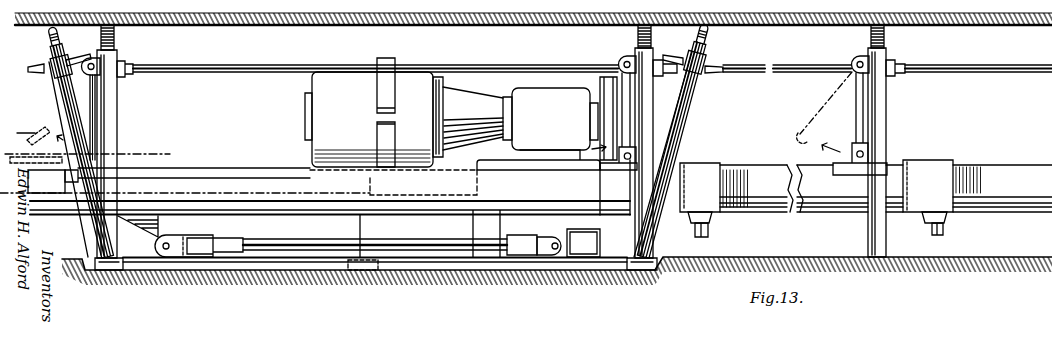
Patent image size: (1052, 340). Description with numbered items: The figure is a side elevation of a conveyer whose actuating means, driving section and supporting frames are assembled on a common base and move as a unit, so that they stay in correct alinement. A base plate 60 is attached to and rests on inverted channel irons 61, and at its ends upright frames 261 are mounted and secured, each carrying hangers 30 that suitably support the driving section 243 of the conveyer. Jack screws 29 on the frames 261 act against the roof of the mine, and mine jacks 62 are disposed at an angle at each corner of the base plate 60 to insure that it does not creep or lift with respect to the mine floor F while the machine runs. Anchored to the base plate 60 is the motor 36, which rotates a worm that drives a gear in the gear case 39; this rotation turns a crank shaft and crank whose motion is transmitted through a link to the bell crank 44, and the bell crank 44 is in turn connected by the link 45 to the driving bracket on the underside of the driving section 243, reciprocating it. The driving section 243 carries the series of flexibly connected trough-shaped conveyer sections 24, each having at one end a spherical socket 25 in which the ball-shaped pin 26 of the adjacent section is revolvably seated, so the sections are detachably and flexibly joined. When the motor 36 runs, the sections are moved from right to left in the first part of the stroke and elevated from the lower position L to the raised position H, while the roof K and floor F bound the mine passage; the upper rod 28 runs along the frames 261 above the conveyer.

The conveyer section 24 is at (757, 167).
The spherical-shaped depression or socket 25 is at (712, 218).
The ball-shaped projection or pin 26 is at (705, 236).
The upper guide rod 28 is at (1007, 65).
The jack screw 29 is at (115, 44).
The hanger 30 is at (98, 100).
The motor 36 is at (315, 113).
The gear case 39 is at (513, 94).
The bell crank 44 is at (600, 247).
The link 45 is at (342, 243).
The base plate 60 is at (183, 262).
The inverted channel iron 61 is at (117, 271).
The mine jack 62 is at (63, 97).
The driving section 243 is at (166, 165).
The frame 261 is at (117, 127).
The mine floor F is at (493, 277).
The ceiling K is at (1003, 0).
The elevated position H is at (17, 132).
The lower position L is at (64, 194).